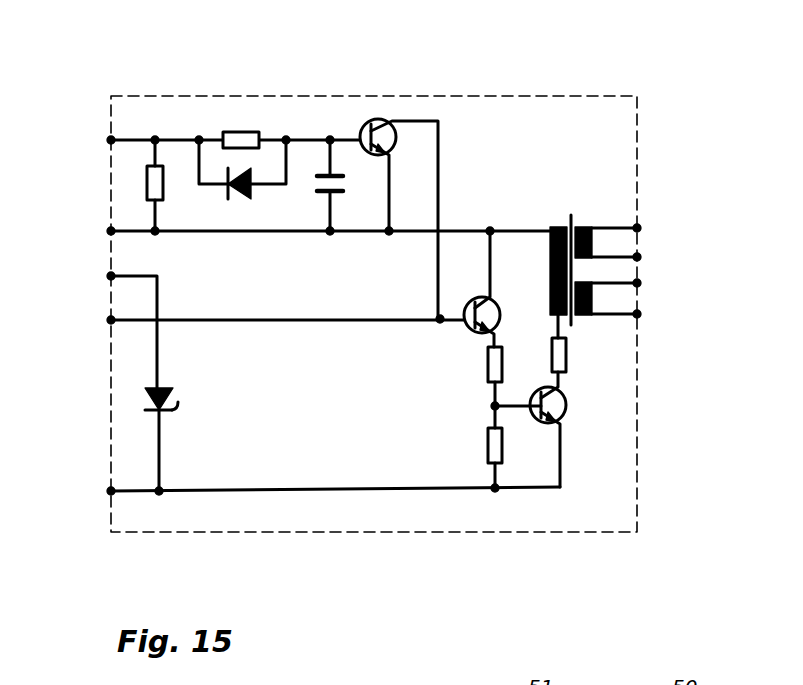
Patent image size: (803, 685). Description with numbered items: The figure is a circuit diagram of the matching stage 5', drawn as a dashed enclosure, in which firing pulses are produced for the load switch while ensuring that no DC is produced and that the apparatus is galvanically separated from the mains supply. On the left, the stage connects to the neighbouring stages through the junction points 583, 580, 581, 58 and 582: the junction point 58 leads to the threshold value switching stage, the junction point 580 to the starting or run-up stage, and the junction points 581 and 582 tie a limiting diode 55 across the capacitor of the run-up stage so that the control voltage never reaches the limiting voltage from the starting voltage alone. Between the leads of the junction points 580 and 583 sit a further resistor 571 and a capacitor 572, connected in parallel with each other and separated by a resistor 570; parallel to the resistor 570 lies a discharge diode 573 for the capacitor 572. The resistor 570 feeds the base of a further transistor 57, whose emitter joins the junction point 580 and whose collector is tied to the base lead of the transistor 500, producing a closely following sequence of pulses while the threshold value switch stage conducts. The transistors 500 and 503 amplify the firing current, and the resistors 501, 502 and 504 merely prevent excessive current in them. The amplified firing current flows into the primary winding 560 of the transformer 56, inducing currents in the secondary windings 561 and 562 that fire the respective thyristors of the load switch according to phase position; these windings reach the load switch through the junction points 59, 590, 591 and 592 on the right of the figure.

The matching stage 5' is at (374, 280).
The limiting diode 55 is at (158, 415).
The transformer 56 is at (630, 274).
The further transistor 57 is at (383, 124).
The junction point 58 is at (110, 323).
The junction point 59 is at (637, 228).
The transistor 500 is at (468, 330).
The resistor 501 is at (493, 382).
The resistor 502 is at (493, 455).
The transistor 503 is at (540, 425).
The resistor 504 is at (563, 372).
The primary winding 560 is at (566, 225).
The secondary winding 561 is at (586, 226).
The secondary winding 562 is at (597, 320).
The resistor 570 is at (241, 140).
The further resistor 571 is at (152, 183).
The capacitor 572 is at (328, 183).
The discharge diode 573 is at (232, 186).
The junction point 580 is at (108, 232).
The junction point 581 is at (108, 278).
The junction point 582 is at (111, 492).
The junction point 583 is at (110, 139).
The junction point 590 is at (637, 257).
The junction point 591 is at (637, 283).
The junction point 592 is at (637, 314).